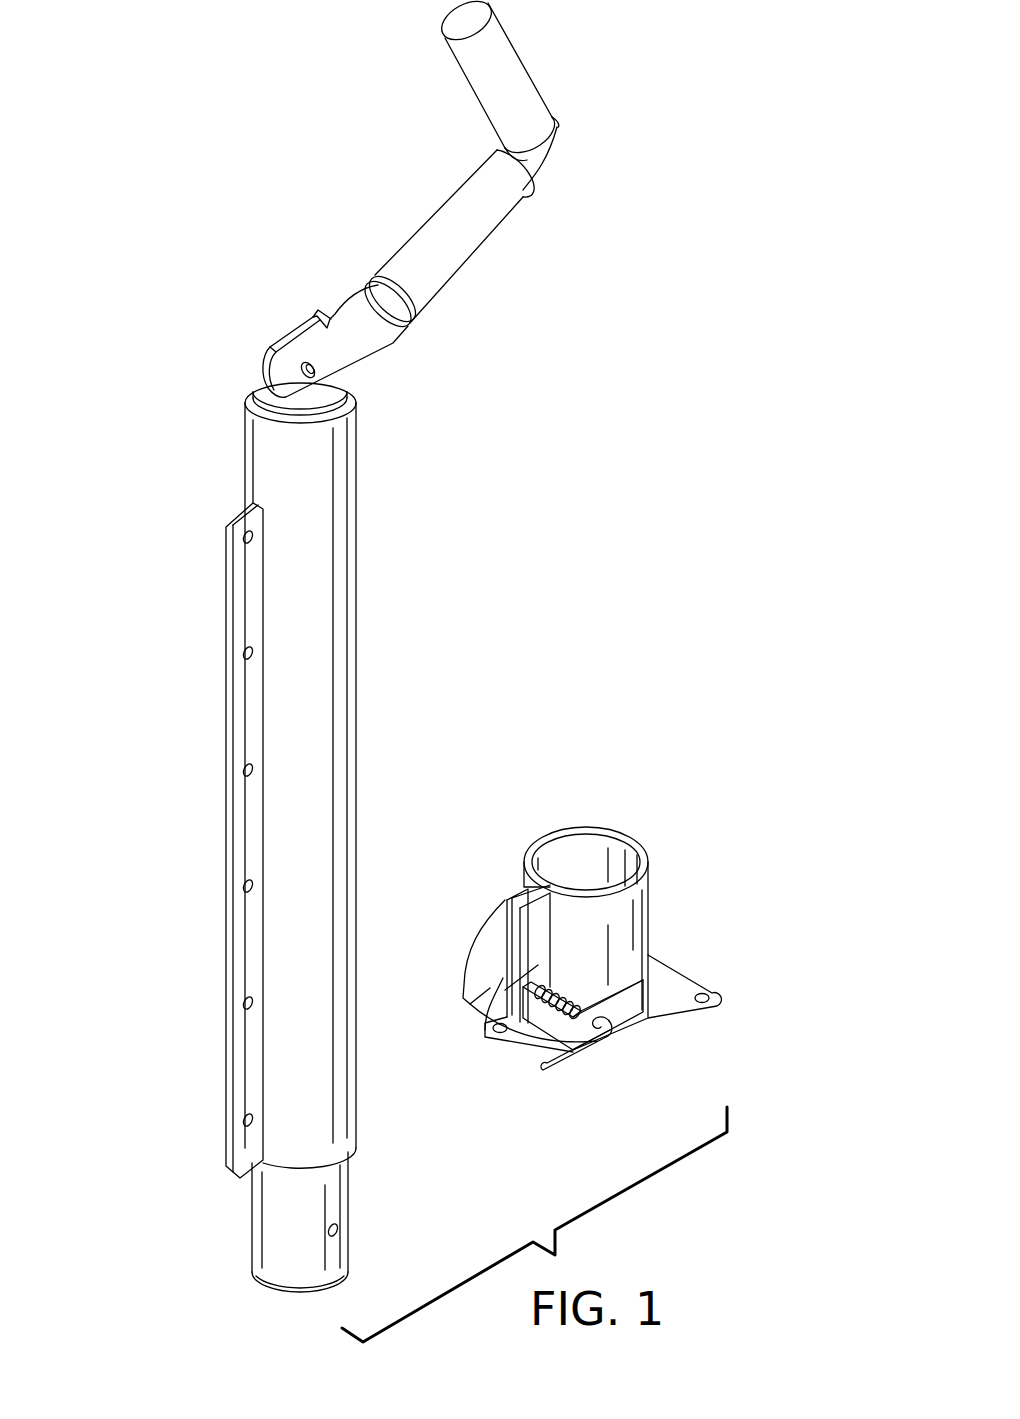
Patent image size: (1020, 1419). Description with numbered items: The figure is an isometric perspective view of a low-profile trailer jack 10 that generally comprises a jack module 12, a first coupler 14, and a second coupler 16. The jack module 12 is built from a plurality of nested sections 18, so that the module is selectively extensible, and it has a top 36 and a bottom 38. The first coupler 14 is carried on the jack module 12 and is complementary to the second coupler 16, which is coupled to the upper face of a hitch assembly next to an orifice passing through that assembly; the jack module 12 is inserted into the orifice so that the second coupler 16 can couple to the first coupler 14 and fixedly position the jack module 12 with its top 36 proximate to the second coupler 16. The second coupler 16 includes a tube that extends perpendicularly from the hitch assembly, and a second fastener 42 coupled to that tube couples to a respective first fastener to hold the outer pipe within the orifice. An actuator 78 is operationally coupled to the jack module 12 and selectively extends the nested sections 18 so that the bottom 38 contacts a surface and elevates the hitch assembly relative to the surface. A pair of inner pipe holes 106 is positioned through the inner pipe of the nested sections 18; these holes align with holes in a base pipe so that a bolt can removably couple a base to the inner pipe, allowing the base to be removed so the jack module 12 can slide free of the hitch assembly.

The low-profile trailer jack 10 is at (732, 387).
The jack module 12 is at (358, 615).
The first coupler 14 is at (252, 680).
The second coupler 16 is at (632, 828).
The nested sections 18 is at (355, 1113).
The top 36 is at (250, 393).
The bottom 38 is at (298, 1294).
The second fastener 42 is at (538, 965).
The actuator 78 is at (357, 303).
The inner pipe holes 106 is at (335, 1237).